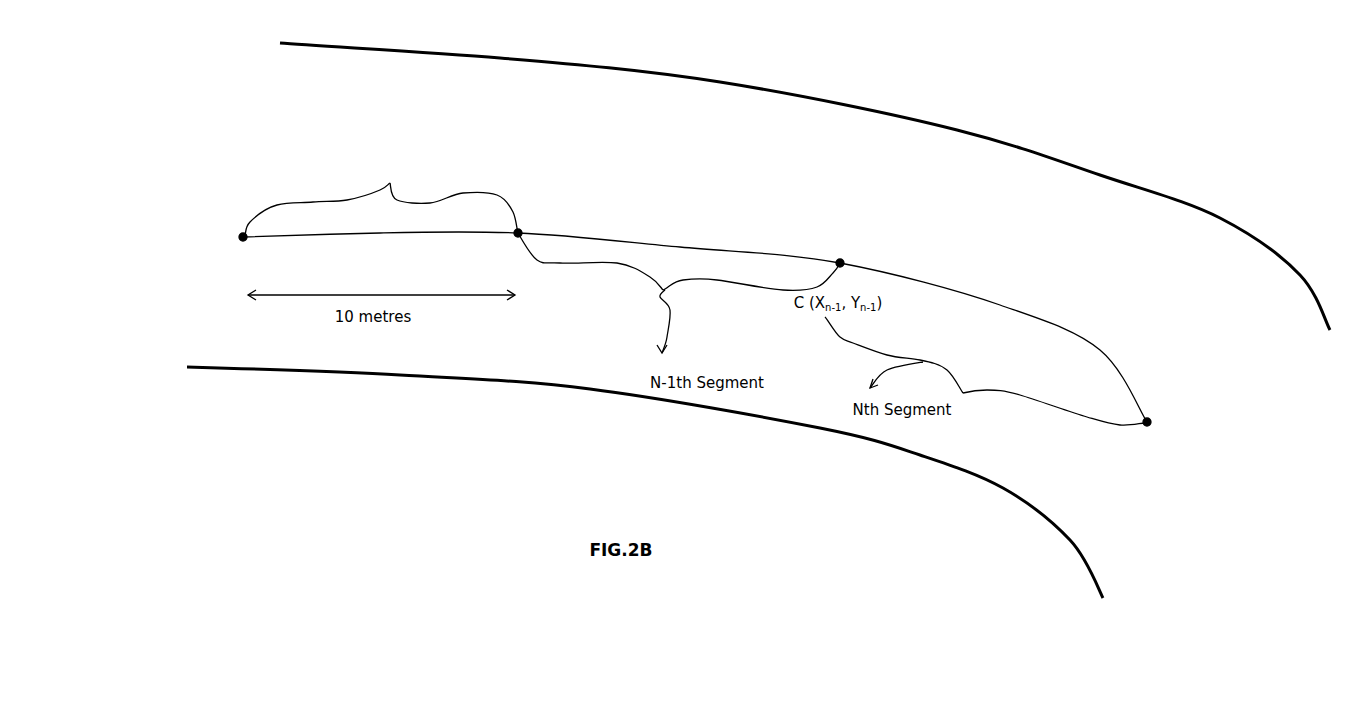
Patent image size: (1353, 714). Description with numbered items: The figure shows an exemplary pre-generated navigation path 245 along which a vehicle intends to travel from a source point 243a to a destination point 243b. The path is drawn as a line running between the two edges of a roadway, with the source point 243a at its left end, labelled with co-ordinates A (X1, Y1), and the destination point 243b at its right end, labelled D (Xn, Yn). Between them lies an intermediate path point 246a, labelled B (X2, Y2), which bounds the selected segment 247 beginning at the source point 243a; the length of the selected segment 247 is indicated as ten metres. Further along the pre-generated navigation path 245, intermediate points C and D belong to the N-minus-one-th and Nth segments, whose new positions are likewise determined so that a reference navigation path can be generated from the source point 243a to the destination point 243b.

The source point 243a is at (243, 237).
The destination point 243b is at (1147, 422).
The pre-generated navigation path 245 is at (735, 250).
The intermediate path point 246a is at (518, 233).
The selected segment 247 is at (428, 203).